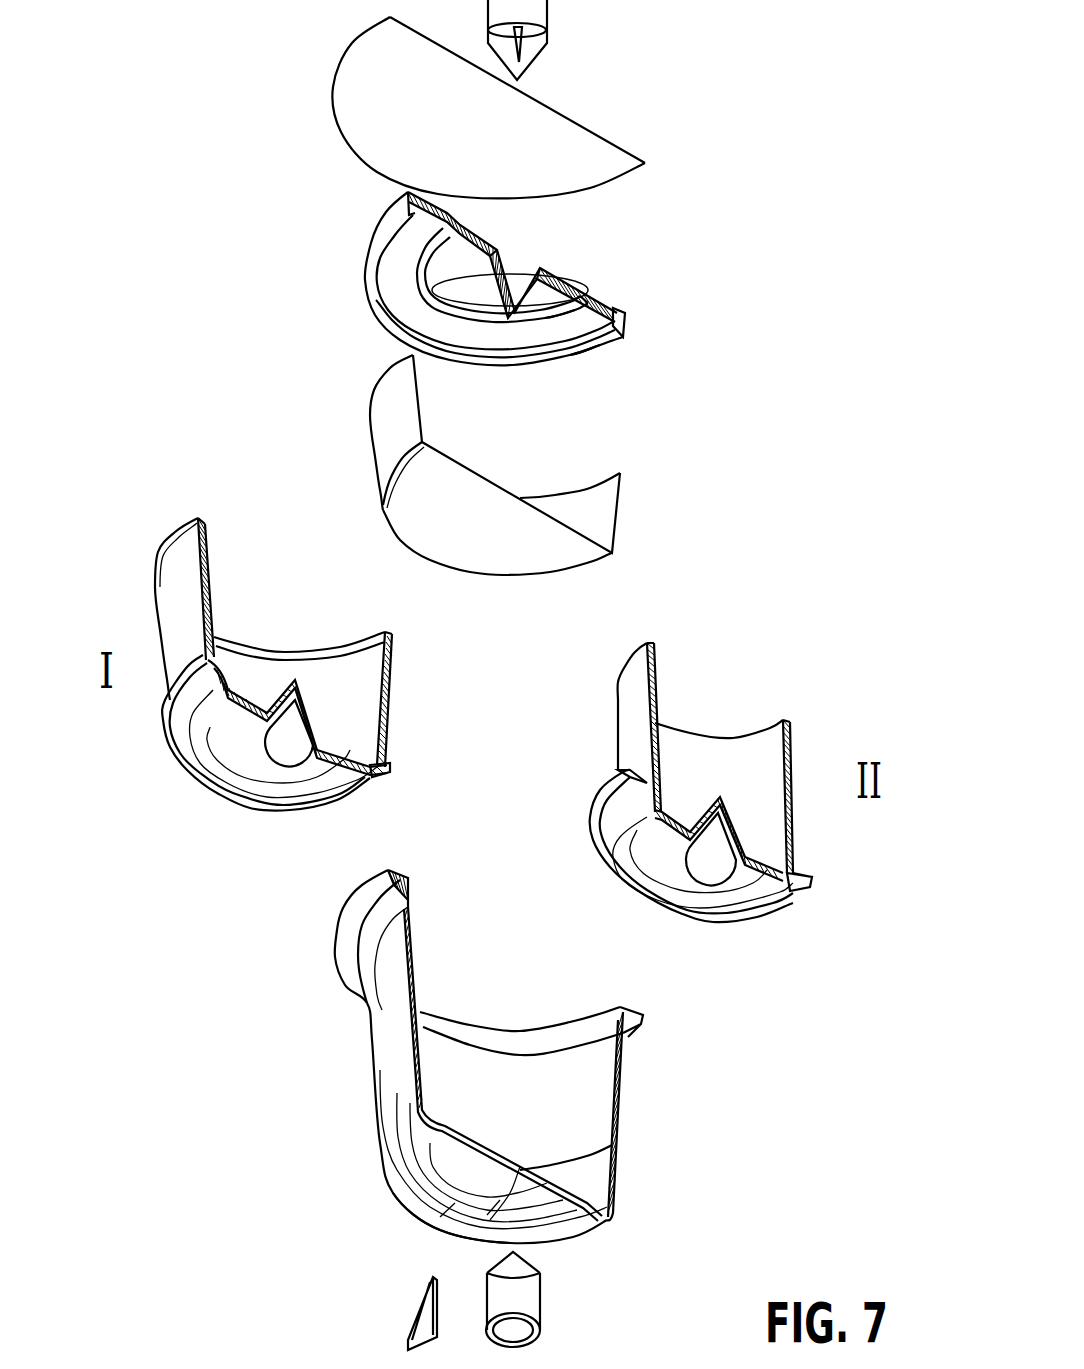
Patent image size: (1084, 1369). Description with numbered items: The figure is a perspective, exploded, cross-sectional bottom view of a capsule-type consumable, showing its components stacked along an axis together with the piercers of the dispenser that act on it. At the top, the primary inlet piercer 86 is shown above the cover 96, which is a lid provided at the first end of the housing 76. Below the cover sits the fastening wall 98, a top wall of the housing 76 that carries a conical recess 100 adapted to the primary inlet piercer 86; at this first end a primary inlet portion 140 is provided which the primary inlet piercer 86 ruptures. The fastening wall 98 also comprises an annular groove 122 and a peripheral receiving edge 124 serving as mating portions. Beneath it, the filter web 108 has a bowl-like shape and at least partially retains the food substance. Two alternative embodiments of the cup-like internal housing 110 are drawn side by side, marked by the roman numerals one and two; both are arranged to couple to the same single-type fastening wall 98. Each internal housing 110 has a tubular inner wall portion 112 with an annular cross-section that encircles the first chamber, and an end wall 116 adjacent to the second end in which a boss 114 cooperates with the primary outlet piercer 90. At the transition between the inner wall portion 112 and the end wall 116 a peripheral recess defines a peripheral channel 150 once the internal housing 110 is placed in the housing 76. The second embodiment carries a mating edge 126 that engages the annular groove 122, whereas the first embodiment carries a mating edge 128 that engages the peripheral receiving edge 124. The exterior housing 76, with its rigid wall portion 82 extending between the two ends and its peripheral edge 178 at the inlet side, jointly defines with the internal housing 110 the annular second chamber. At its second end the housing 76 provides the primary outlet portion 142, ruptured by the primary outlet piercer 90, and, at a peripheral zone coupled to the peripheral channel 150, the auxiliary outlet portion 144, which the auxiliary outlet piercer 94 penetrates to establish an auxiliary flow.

The housing 76 is at (462, 1066).
The rigid wall portion 82 is at (620, 1098).
The primary inlet piercer 86 is at (546, 3).
The primary outlet piercer 90 is at (535, 1305).
The auxiliary outlet piercer 94 is at (422, 1318).
The cover 96 is at (583, 143).
The fastening wall 98 is at (477, 310).
The conical recess 100 is at (443, 278).
The filter web 108 is at (388, 429).
The internal housing 110 is at (530, 686).
The inner wall portion 112 is at (392, 675).
The boss 114 is at (280, 700).
The end wall 116 is at (345, 757).
The annular groove 122 is at (570, 330).
The peripheral receiving edge 124 is at (603, 345).
The mating edge 126 is at (647, 640).
The mating edge 128 is at (193, 522).
The primary inlet portion 140 is at (565, 292).
The primary outlet portion 142 is at (450, 1232).
The auxiliary outlet portion 144 is at (405, 1183).
The peripheral channel 150 is at (375, 773).
The peripheral edge 178 is at (345, 942).